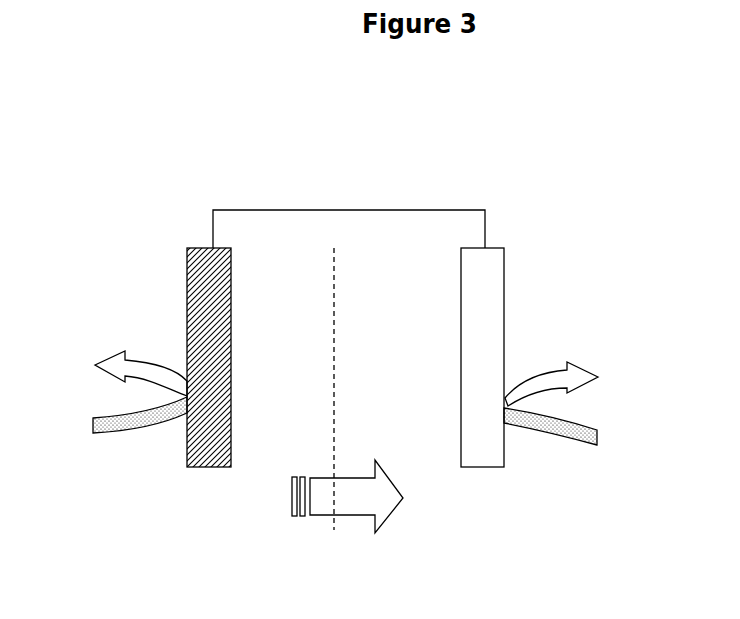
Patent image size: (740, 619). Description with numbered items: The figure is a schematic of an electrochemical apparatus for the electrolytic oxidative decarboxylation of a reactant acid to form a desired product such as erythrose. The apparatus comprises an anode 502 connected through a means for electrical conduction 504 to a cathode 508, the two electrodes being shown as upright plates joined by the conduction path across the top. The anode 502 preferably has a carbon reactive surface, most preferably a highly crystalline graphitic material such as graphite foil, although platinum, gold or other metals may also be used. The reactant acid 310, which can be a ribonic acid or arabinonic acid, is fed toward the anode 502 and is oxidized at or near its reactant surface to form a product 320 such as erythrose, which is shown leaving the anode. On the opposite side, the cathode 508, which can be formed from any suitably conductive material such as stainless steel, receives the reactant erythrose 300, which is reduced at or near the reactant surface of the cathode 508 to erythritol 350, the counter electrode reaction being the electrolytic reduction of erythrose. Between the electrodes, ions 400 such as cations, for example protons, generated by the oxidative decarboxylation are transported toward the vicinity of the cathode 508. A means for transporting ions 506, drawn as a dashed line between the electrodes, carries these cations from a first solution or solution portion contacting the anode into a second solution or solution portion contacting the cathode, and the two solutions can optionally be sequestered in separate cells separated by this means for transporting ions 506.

The reactant erythrose 300 is at (576, 431).
The reactant acid 310 is at (116, 419).
The product 320 is at (120, 369).
The erythritol 350 is at (576, 383).
The ions 400 is at (322, 515).
The anode 502 is at (186, 358).
The means for electrical conduction 504 is at (230, 210).
The means for transporting ions 506 is at (335, 272).
The cathode 508 is at (483, 295).